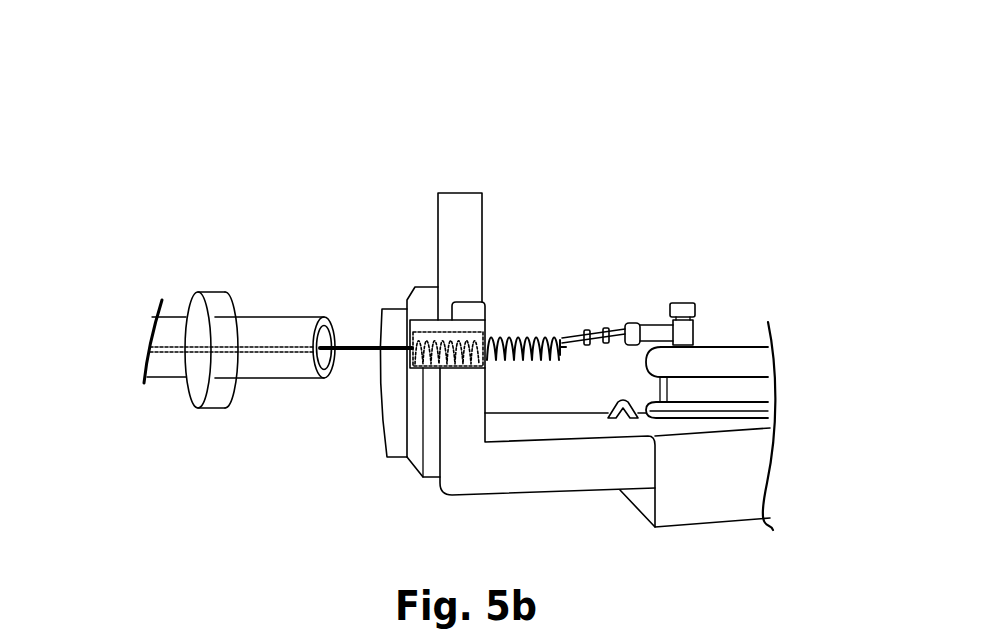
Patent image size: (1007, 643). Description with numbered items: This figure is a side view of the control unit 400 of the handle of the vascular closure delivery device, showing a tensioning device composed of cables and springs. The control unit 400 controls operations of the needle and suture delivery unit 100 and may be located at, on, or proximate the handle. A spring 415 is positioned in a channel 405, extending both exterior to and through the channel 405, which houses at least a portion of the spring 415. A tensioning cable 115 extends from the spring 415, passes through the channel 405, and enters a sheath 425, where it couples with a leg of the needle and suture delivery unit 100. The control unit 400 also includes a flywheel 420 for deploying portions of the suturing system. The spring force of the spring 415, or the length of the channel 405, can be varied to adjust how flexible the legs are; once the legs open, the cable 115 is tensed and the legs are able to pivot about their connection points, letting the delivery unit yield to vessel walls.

The needle and suture delivery unit 100 is at (117, 399).
The tensioning cable 115 is at (357, 342).
The control unit 400 is at (637, 143).
The channel 405 is at (480, 368).
The spring 415 is at (530, 334).
The flywheel 420 is at (710, 352).
The sheath 425 is at (263, 316).